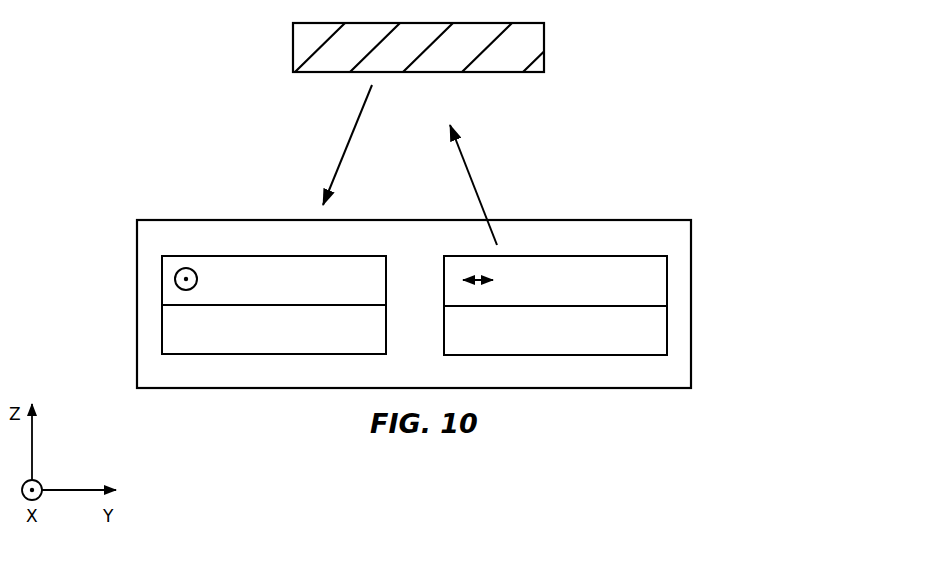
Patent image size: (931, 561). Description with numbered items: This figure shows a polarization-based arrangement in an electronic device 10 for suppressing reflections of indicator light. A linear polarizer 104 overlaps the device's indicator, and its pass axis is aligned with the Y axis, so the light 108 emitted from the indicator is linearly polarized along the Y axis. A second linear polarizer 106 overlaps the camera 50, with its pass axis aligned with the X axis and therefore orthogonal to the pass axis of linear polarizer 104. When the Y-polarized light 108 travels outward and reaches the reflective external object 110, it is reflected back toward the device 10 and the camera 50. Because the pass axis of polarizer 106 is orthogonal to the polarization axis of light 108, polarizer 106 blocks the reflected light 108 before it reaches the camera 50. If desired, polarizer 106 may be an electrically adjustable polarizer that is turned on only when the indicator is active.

The electronic device 10 is at (691, 352).
The camera 50 is at (162, 327).
The linear polarizer 104 is at (667, 278).
The linear polarizer 106 is at (162, 277).
The light 108 is at (344, 155).
The reflective external object 110 is at (546, 45).